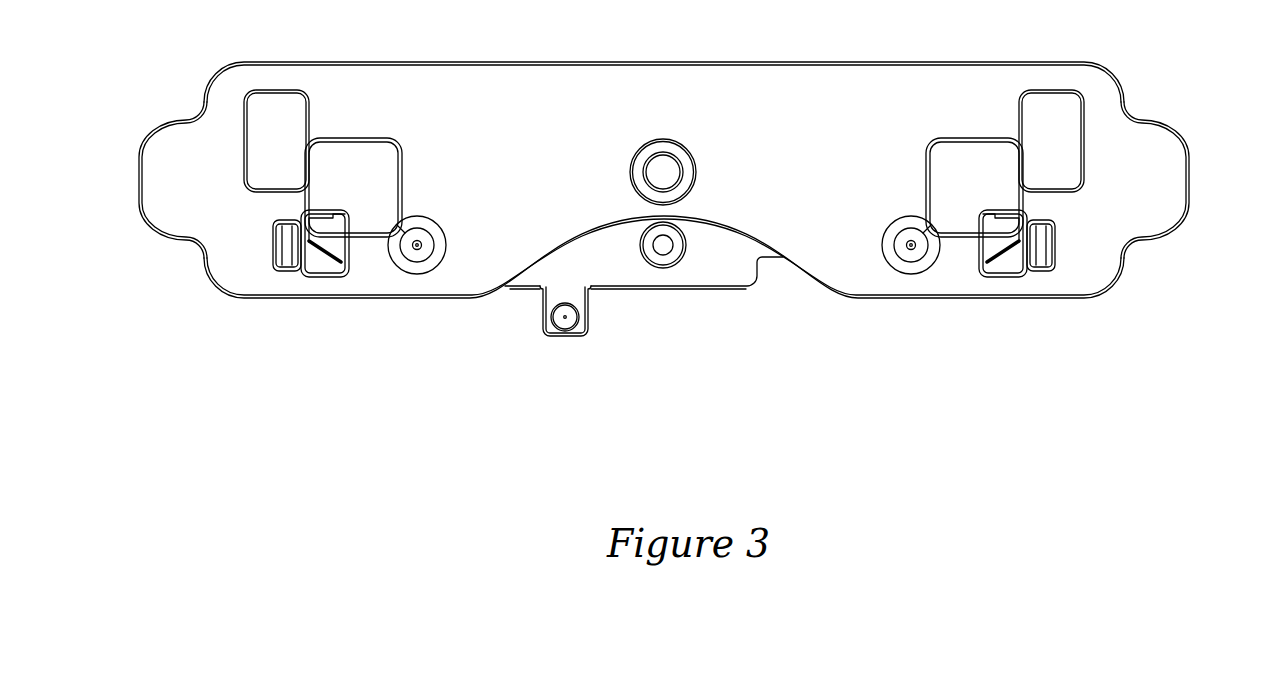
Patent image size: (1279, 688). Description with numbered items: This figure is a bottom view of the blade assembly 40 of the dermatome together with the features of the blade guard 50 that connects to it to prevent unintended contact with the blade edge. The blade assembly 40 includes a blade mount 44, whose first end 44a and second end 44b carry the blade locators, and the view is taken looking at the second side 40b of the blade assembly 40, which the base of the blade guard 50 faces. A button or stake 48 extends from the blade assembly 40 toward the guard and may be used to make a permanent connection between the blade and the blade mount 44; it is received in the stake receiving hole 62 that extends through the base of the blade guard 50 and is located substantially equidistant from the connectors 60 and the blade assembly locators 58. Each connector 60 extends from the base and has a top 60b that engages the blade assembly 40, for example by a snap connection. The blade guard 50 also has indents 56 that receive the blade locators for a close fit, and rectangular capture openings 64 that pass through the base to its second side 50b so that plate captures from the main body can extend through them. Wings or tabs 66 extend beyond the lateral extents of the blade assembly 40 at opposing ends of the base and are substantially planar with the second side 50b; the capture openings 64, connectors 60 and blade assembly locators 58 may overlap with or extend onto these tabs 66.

The blade assembly 40 is at (725, 287).
The second side of blade assembly 40b is at (630, 272).
The blade mount 44 is at (635, 288).
The first end of blade mount 44a is at (333, 262).
The second end of blade mount 44b is at (994, 262).
The button or stake 48 is at (684, 163).
The blade guard 50 is at (860, 62).
The second side of base 50b is at (553, 166).
The indents 56 is at (359, 138).
The blade assembly locators 58 is at (430, 232).
The connector 60 is at (273, 243).
The top of connector 60b is at (318, 277).
The stake receiving hole 62 is at (653, 140).
The capture opening 64 is at (240, 152).
The tabs 66 is at (140, 152).